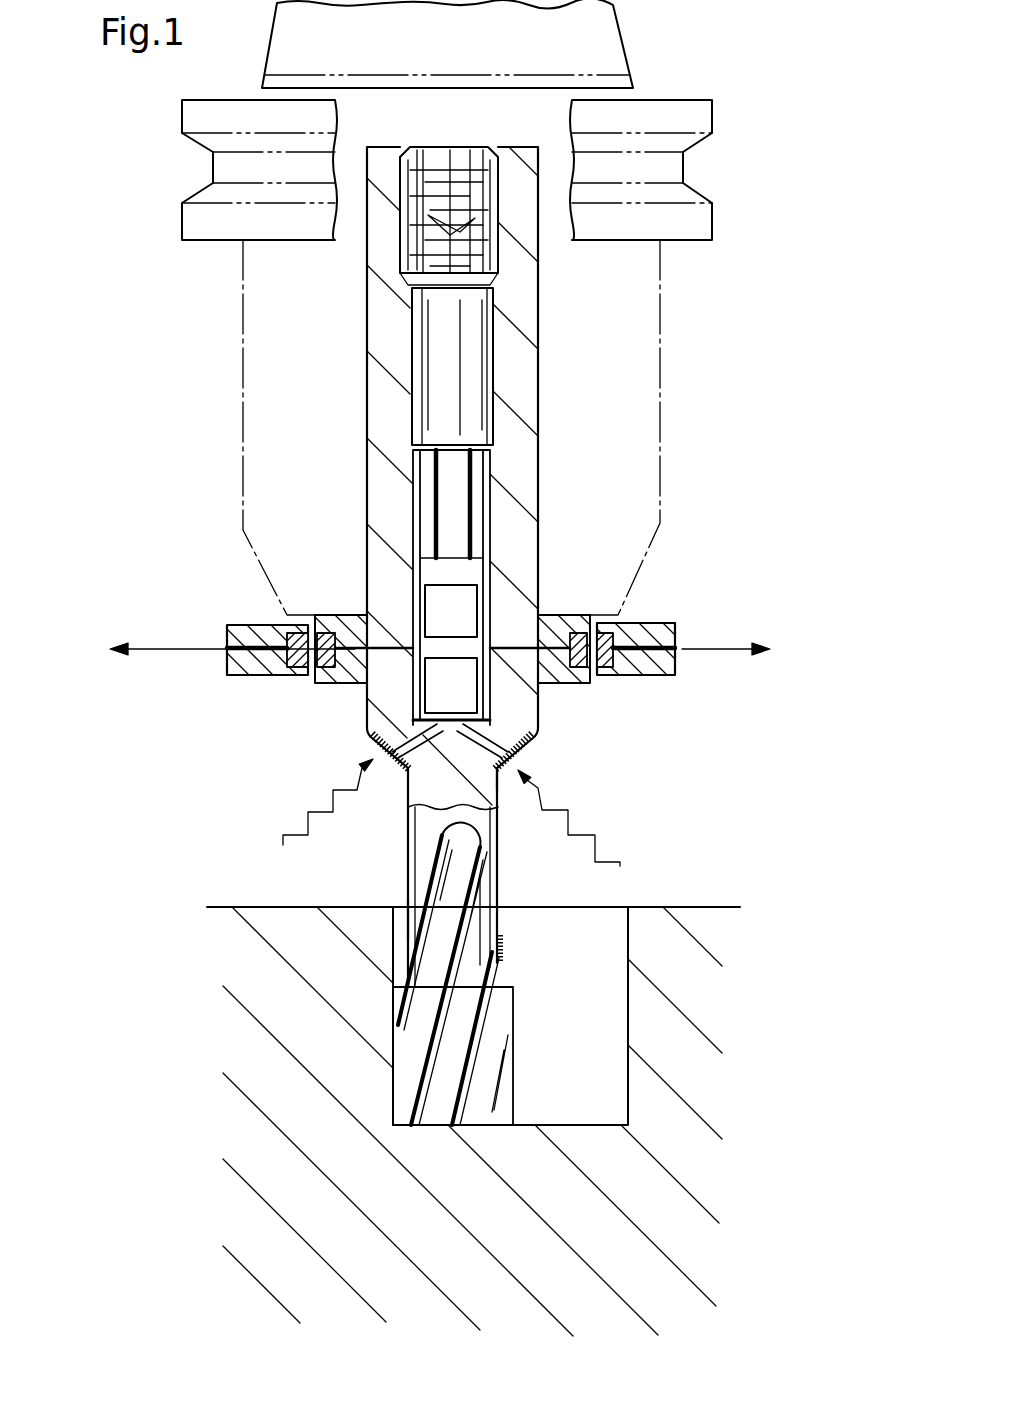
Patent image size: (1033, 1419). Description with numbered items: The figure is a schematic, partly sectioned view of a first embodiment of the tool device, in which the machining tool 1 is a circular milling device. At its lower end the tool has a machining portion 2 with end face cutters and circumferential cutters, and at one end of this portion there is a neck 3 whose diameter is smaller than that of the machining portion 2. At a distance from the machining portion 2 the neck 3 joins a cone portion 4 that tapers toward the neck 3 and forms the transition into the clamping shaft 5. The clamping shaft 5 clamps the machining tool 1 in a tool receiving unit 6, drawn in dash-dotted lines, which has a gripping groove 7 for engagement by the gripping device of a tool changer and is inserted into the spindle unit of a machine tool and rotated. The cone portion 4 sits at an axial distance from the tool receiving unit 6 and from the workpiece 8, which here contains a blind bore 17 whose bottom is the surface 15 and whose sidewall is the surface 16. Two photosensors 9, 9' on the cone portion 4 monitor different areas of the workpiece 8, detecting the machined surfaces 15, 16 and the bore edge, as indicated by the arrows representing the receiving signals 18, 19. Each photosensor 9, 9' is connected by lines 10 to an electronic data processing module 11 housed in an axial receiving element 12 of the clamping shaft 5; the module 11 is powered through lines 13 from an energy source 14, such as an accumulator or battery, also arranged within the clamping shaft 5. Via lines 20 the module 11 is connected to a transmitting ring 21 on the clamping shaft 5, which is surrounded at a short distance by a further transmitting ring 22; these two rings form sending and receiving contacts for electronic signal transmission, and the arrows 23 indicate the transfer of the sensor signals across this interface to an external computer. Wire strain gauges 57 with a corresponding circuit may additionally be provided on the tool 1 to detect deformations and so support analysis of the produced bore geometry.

The machining tool 1 is at (393, 940).
The machining portion 2 is at (498, 1057).
The neck 3 is at (420, 867).
The cone portion 4 is at (496, 753).
The clamping shaft 5 is at (523, 439).
The tool receiving unit 6 is at (643, 333).
The gripping groove 7 is at (687, 172).
The workpiece 8 is at (312, 1045).
The photosensor 9 is at (511, 812).
The photosensor 9' is at (346, 755).
The lines 10 is at (507, 738).
The electronic data processing module 11 is at (440, 608).
The axial receiving element 12 is at (490, 518).
The lines 13 is at (432, 515).
The energy source 14 is at (430, 397).
The surface 15 is at (592, 1125).
The surface 16 is at (630, 947).
The blind bore 17 is at (608, 932).
The receiving signal 18 is at (309, 822).
The receiving signal 19 is at (578, 837).
The lines 20 is at (413, 678).
The transmitting ring 21 is at (305, 647).
The further transmitting ring 22 is at (262, 660).
The arrows 23 is at (440, 668).
The wire strain gauges 57 is at (392, 1013).